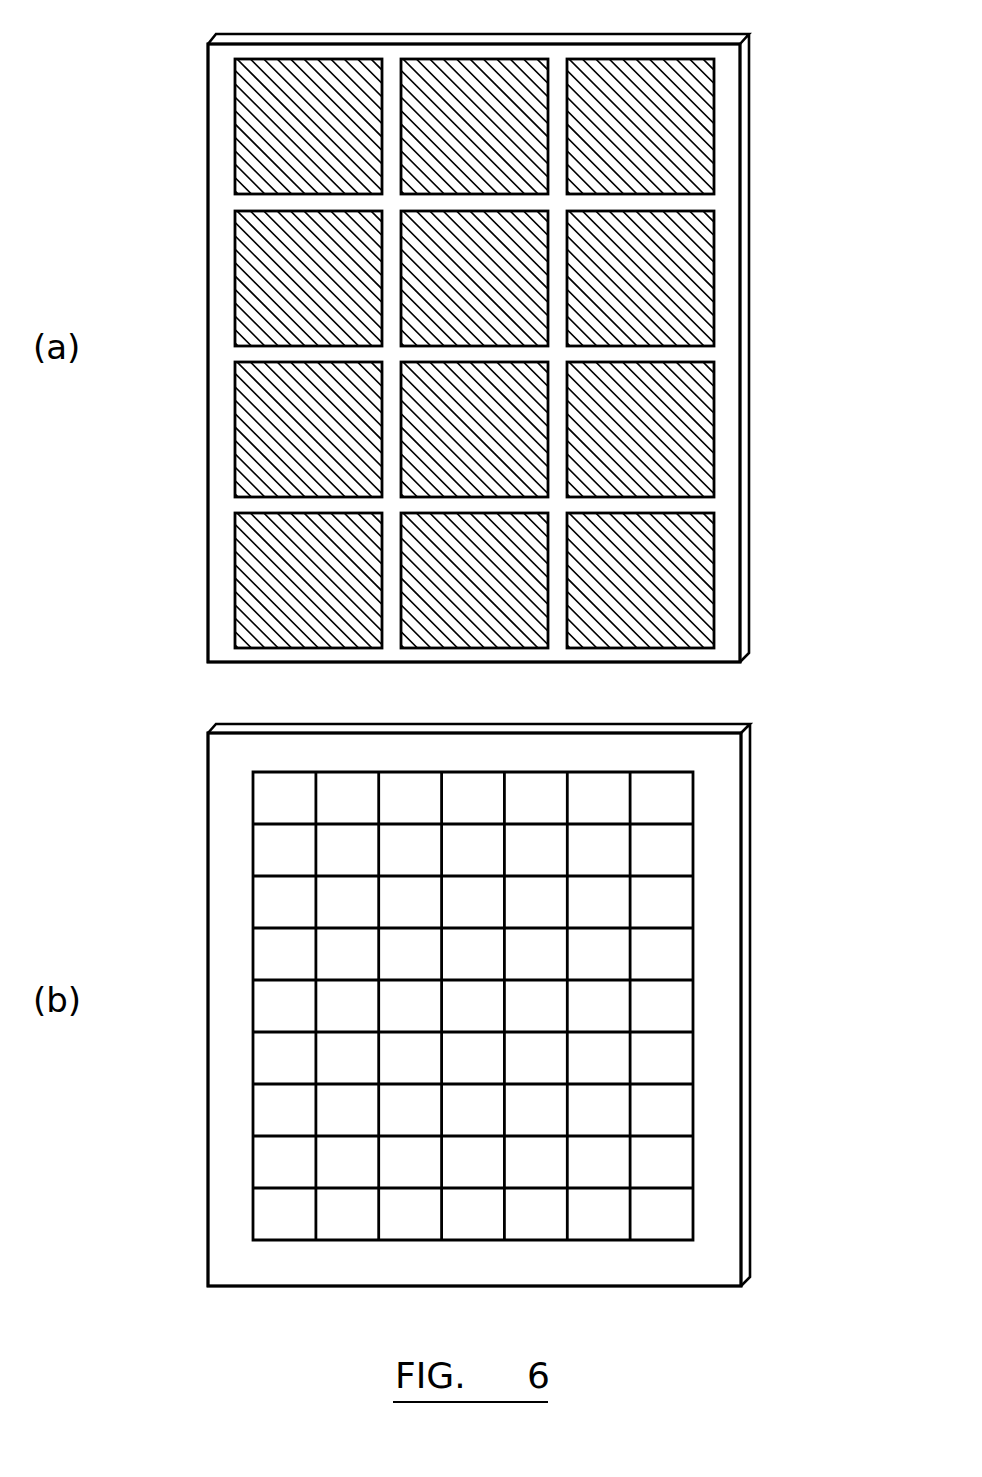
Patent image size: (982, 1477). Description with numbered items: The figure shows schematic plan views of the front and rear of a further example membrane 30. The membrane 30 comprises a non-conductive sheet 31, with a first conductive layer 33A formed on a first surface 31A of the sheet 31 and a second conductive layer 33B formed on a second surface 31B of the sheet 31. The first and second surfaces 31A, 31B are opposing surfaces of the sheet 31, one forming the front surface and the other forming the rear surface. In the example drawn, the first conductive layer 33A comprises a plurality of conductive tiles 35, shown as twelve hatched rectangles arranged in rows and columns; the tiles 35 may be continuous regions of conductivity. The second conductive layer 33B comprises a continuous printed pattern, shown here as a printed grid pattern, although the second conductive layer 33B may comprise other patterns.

The membrane 30 is at (770, 79).
The non-conductive sheet 31 is at (208, 108).
The first surface 31A is at (728, 134).
The second surface 31B is at (720, 953).
The first conductive layer 33A is at (685, 585).
The second conductive layer 33B is at (695, 1062).
The conductive tiles 35 is at (685, 290).